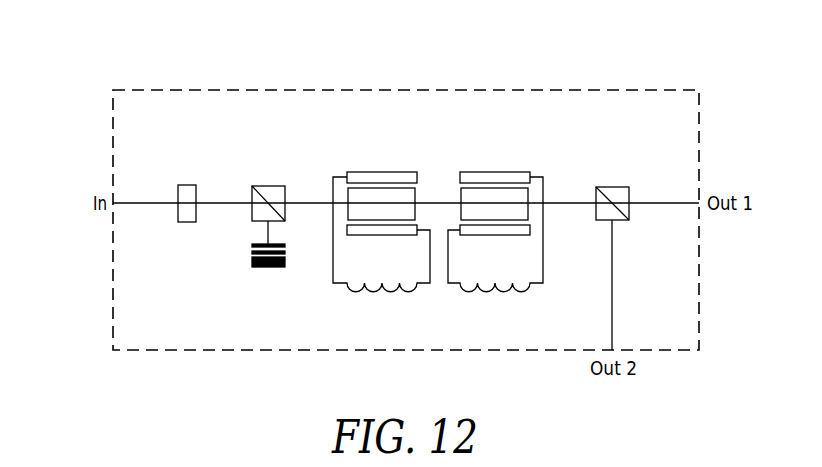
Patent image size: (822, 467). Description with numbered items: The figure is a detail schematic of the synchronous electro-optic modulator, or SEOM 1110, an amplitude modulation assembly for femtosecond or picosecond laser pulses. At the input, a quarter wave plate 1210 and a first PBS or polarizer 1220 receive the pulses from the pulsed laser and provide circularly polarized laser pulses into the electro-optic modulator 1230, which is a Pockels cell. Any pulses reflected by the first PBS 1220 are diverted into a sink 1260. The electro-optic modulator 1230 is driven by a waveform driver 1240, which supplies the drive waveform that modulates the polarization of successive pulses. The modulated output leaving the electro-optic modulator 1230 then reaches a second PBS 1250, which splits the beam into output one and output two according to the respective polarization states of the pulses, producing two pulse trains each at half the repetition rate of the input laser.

The synchronous EOM (SEOM) 1110 is at (706, 70).
The quarter wave plate 1210 is at (178, 190).
The first PBS or polarizer 1220 is at (252, 189).
The electro-optic modulator 1230 is at (333, 192).
The waveform driver 1240 is at (530, 288).
The second PBS 1250 is at (629, 214).
The sink 1260 is at (252, 261).